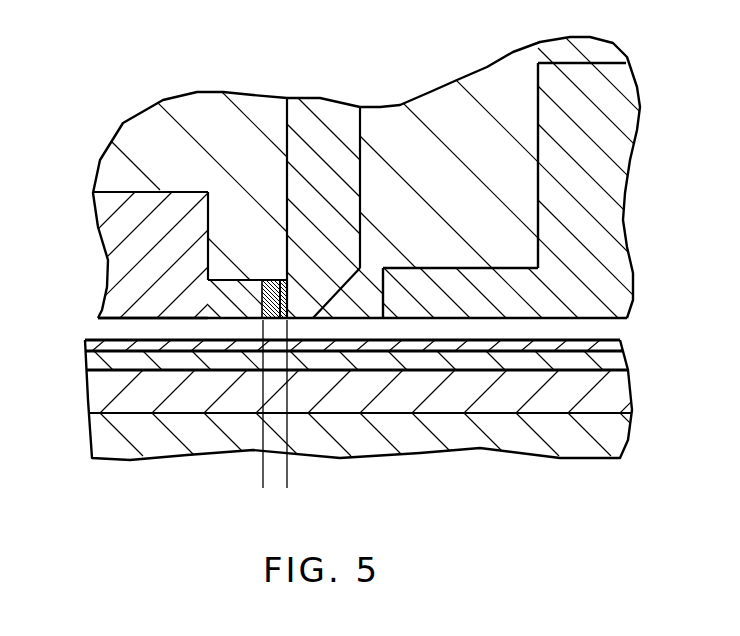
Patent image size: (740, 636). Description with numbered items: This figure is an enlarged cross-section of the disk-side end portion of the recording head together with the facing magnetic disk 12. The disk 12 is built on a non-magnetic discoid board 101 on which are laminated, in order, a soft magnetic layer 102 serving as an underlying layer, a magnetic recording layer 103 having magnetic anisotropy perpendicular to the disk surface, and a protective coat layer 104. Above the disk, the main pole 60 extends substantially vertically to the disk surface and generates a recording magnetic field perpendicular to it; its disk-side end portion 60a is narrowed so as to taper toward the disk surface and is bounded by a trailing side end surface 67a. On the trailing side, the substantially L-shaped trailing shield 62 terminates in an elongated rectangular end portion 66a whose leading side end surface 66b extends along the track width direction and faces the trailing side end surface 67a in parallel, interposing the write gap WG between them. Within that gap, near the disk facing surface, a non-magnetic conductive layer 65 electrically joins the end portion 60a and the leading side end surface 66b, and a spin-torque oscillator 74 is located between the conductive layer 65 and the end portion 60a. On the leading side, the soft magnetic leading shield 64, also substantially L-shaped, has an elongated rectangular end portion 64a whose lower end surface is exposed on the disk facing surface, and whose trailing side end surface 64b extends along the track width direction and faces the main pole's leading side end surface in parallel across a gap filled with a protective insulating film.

The magnetic disk 12 is at (130, 478).
The main pole 60 is at (331, 108).
The end portion of the main pole 60a is at (312, 278).
The trailing shield 62 is at (102, 202).
The leading shield 64 is at (633, 133).
The end portion of the leading shield 64a is at (533, 137).
The trailing side end surface of the leading shield end portion 64b is at (381, 293).
The non-magnetic conductive layer 65 is at (262, 322).
The end portion of the trailing shield 66a is at (130, 303).
The leading side end surface of the trailing shield end portion 66b is at (255, 298).
The trailing side end surface of the main pole 67a is at (287, 183).
The spin-torque oscillator 74 is at (270, 270).
The board 101 is at (100, 438).
The soft magnetic layer 102 is at (90, 392).
The magnetic recording layer 103 is at (88, 362).
The protective coat layer 104 is at (86, 345).
The write gap WG is at (327, 482).